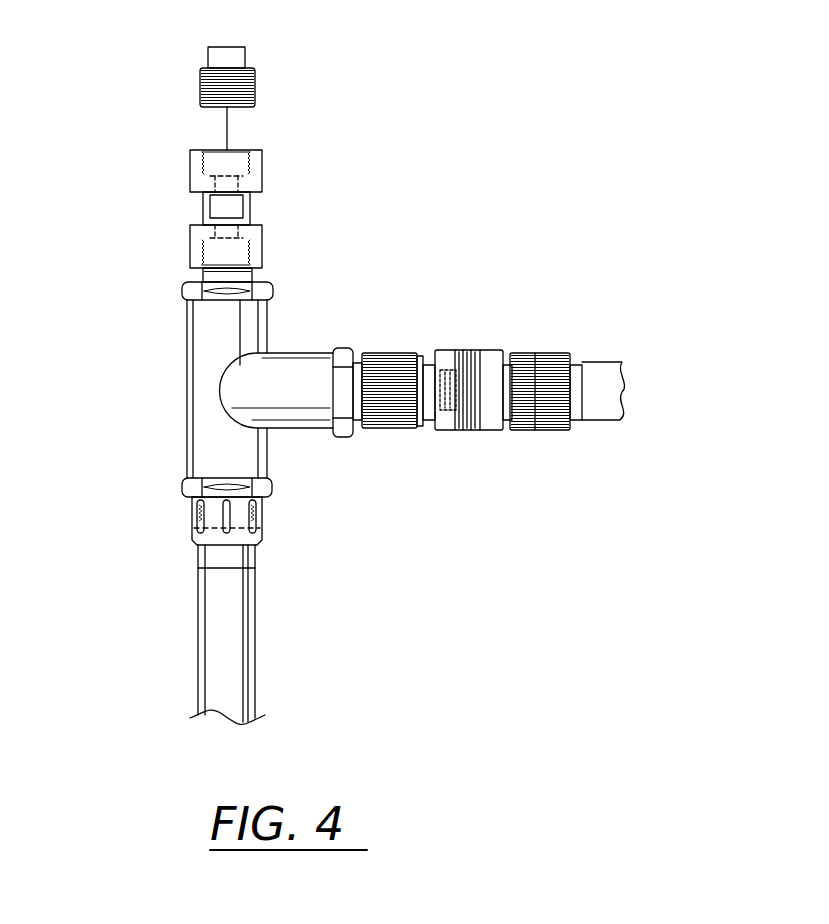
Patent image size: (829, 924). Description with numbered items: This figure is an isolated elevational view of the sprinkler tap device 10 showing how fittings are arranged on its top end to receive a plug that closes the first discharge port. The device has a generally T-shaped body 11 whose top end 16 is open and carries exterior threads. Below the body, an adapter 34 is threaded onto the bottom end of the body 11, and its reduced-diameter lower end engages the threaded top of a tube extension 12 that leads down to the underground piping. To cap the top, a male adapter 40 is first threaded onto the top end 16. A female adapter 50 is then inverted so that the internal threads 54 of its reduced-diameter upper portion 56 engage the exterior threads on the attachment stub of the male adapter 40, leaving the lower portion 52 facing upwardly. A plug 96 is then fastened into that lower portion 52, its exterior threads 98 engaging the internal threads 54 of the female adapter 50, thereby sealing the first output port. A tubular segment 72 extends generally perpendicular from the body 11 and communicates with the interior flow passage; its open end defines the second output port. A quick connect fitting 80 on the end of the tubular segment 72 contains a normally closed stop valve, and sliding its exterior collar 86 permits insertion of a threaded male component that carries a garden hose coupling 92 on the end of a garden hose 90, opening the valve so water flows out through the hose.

The sprinkler tap device 10 is at (314, 316).
The T-shaped body 11 is at (186, 390).
The tube extension 12 is at (213, 620).
The top end 16 is at (203, 272).
The adapter 34 is at (192, 515).
The male adapter 40 is at (188, 239).
The female adapter 50 is at (211, 185).
The lower portion 52 is at (262, 172).
The internal threads 54 is at (240, 160).
The upper portion 56 is at (250, 205).
The tubular segment 72 is at (320, 351).
The quick connect fitting 80 is at (481, 378).
The exterior collar 86 is at (465, 430).
The garden hose 90 is at (608, 362).
The garden hose coupling 92 is at (537, 355).
The plug 96 is at (249, 62).
The exterior threads 98 is at (256, 83).